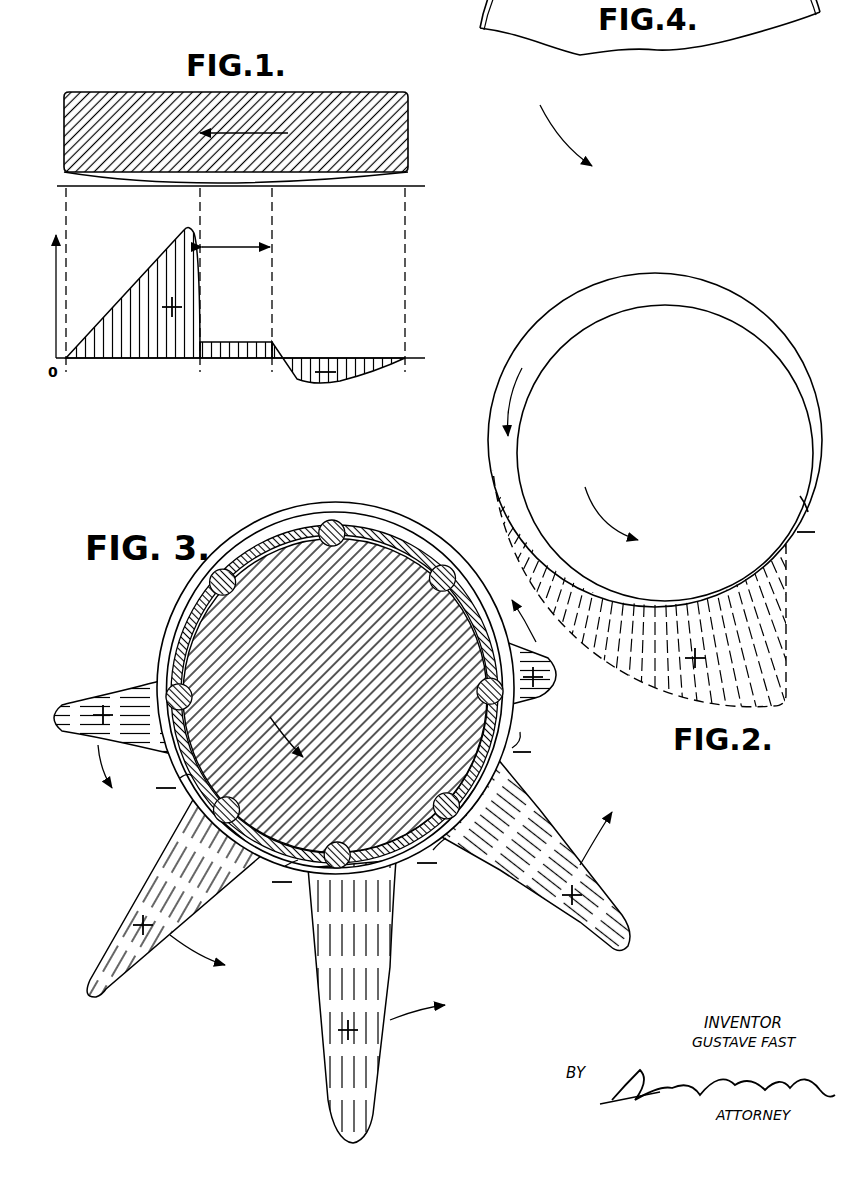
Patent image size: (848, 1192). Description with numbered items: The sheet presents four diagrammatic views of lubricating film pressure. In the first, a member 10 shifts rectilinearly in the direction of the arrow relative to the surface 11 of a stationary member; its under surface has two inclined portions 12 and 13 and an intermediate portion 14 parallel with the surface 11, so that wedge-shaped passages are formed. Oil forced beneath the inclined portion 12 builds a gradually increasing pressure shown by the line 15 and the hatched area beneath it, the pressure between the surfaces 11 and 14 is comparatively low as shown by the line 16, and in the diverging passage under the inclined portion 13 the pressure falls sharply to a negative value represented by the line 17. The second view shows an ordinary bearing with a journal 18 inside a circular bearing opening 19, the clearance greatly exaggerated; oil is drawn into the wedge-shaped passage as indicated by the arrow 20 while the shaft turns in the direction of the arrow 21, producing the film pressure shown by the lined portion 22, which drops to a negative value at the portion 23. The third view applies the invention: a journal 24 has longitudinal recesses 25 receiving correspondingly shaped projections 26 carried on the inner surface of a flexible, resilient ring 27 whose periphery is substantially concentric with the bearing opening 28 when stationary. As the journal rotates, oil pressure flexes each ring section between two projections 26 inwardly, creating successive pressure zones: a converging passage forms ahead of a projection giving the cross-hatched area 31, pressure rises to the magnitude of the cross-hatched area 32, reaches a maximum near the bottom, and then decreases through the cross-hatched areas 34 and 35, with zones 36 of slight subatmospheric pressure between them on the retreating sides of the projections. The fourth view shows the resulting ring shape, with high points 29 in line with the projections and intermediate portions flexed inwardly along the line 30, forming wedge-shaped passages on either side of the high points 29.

In FIG. 1, the member 10 is at (347, 108).
In FIG. 1, the surface 11 is at (341, 188).
In FIG. 1, the inclined portion 12 is at (115, 180).
In FIG. 1, the inclined portion 13 is at (377, 180).
In FIG. 1, the intermediate portion 14 is at (233, 183).
In FIG. 1, the line 15 is at (122, 302).
In FIG. 1, the line 16 is at (250, 342).
In FIG. 1, the line 17 is at (336, 384).
In FIG. 2, the journal 18 is at (760, 347).
In FIG. 2, the circular bearing opening 19 is at (708, 285).
In FIG. 2, the arrow 20 is at (518, 400).
In FIG. 2, the arrow 21 is at (608, 521).
In FIG. 2, the lined portion 22 is at (772, 651).
In FIG. 2, the portion 23 is at (800, 500).
In FIG. 3, the journal 24 is at (386, 570).
In FIG. 3, the longitudinal recesses 25 is at (426, 566).
In FIG. 3, the projections 26 is at (450, 588).
In FIG. 3, the ring 27 is at (366, 526).
In FIG. 3, the bearing opening 28 is at (266, 521).
In FIG. 4, the high points 29 is at (530, 190).
In FIG. 4, the line 30 is at (584, 223).
In FIG. 3, the cross-hatched area 31 is at (122, 740).
In FIG. 3, the cross-hatched area 32 is at (195, 905).
In FIG. 3, the cross-hatched area 34 is at (543, 826).
In FIG. 3, the cross-hatched area 35 is at (535, 700).
In FIG. 3, the zones 36 is at (186, 796).